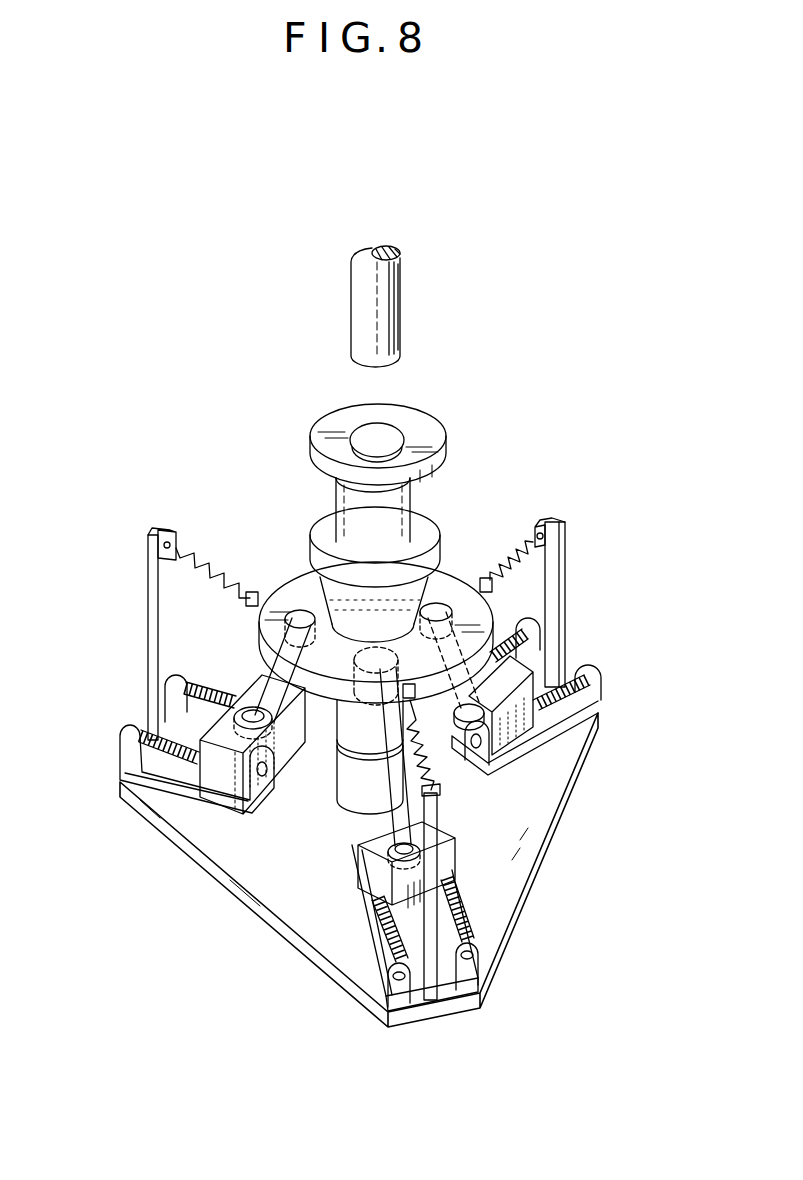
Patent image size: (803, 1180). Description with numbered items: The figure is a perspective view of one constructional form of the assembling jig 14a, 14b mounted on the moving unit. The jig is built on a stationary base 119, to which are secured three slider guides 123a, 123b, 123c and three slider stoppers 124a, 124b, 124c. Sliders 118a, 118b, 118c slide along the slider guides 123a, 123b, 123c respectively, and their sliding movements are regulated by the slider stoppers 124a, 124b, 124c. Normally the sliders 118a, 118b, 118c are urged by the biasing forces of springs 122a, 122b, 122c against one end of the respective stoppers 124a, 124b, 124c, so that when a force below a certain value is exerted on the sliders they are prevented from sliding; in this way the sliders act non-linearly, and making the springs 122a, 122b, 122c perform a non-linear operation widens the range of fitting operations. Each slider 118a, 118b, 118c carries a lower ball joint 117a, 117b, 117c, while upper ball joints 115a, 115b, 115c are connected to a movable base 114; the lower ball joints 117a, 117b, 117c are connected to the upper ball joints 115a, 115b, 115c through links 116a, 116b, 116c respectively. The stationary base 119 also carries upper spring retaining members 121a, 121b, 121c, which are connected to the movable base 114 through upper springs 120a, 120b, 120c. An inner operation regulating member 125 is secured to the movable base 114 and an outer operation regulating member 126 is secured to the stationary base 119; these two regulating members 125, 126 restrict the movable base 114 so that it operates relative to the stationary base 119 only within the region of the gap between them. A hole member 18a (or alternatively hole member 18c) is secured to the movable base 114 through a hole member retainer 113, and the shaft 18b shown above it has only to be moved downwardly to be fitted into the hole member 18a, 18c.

The assembling jig 14a is at (357, 731).
The assembling jig 14b is at (278, 486).
The hole member 18a is at (500, 441).
The shaft 18b is at (398, 278).
The hole member 18c is at (432, 438).
The hole member retainer 113 is at (422, 528).
The movable base 114 is at (364, 605).
The upper ball joint 115a is at (293, 608).
The upper ball joint 115b is at (398, 670).
The upper ball joint 115c is at (450, 585).
The link 116a is at (249, 735).
The link 116b is at (352, 786).
The link 116c is at (474, 661).
The lower ball joint 117a is at (233, 806).
The lower ball joint 117b is at (360, 876).
The lower ball joint 117c is at (400, 712).
The slider 118a is at (205, 790).
The slider 118b is at (355, 858).
The slider 118c is at (503, 756).
The stationary base 119 is at (235, 866).
The upper spring 120a is at (208, 562).
The upper spring 120b is at (428, 778).
The upper spring 120c is at (503, 547).
The upper spring retaining member 121a is at (152, 590).
The upper spring retaining member 121b is at (441, 840).
The upper spring retaining member 121c is at (566, 565).
The spring 122a is at (159, 748).
The spring 122b is at (475, 928).
The spring 122c is at (561, 695).
The slider guide 123a is at (145, 730).
The slider guide 123b is at (462, 900).
The slider guide 123c is at (566, 677).
The slider stopper 124a is at (120, 750).
The slider stopper 124b is at (474, 972).
The slider stopper 124c is at (588, 684).
The inner operation regulating member 125 is at (344, 748).
The outer operation regulating member 126 is at (343, 786).